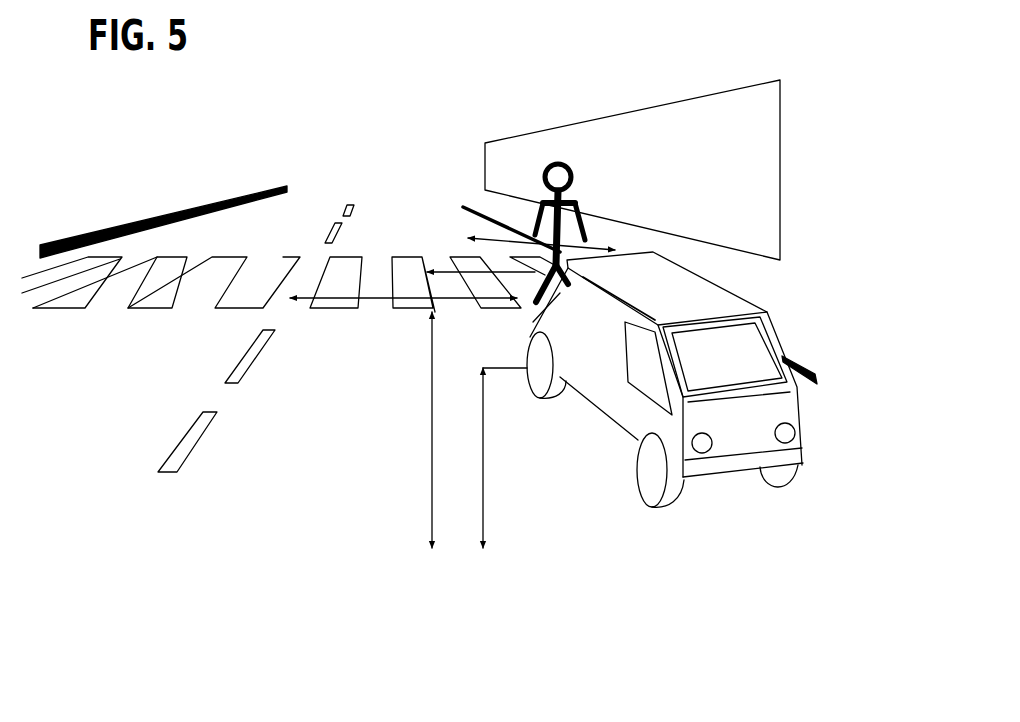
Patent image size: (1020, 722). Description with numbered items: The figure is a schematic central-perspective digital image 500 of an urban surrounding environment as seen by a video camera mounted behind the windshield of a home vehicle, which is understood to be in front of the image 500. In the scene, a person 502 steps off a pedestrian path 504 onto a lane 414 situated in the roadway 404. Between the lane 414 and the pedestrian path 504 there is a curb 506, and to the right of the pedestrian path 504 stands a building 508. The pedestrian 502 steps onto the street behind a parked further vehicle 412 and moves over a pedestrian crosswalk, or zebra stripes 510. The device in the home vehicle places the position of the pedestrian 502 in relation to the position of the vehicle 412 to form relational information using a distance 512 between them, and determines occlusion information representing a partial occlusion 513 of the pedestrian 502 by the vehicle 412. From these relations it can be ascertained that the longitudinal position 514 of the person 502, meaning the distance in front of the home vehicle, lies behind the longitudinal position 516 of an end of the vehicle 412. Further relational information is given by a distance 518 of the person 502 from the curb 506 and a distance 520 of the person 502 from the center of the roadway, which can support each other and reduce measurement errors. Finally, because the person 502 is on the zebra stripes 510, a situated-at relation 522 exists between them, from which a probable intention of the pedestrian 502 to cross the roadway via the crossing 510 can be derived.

The central-perspective digital image 500 is at (317, 178).
The roadway 404 is at (191, 524).
The lane 414 is at (86, 434).
The person 502 is at (558, 162).
The pedestrian path 504 is at (804, 297).
The curb 506 is at (86, 243).
The building 508 is at (677, 102).
The pedestrian crosswalk 510 is at (148, 310).
The distance 512 is at (600, 238).
The partial occlusion 513 is at (530, 326).
The longitudinal position 514 is at (432, 420).
The longitudinal position 516 is at (485, 488).
The distance 518 is at (461, 208).
The distance 520 is at (377, 309).
The situated at relation 522 is at (438, 265).
The further vehicle 412 is at (728, 478).